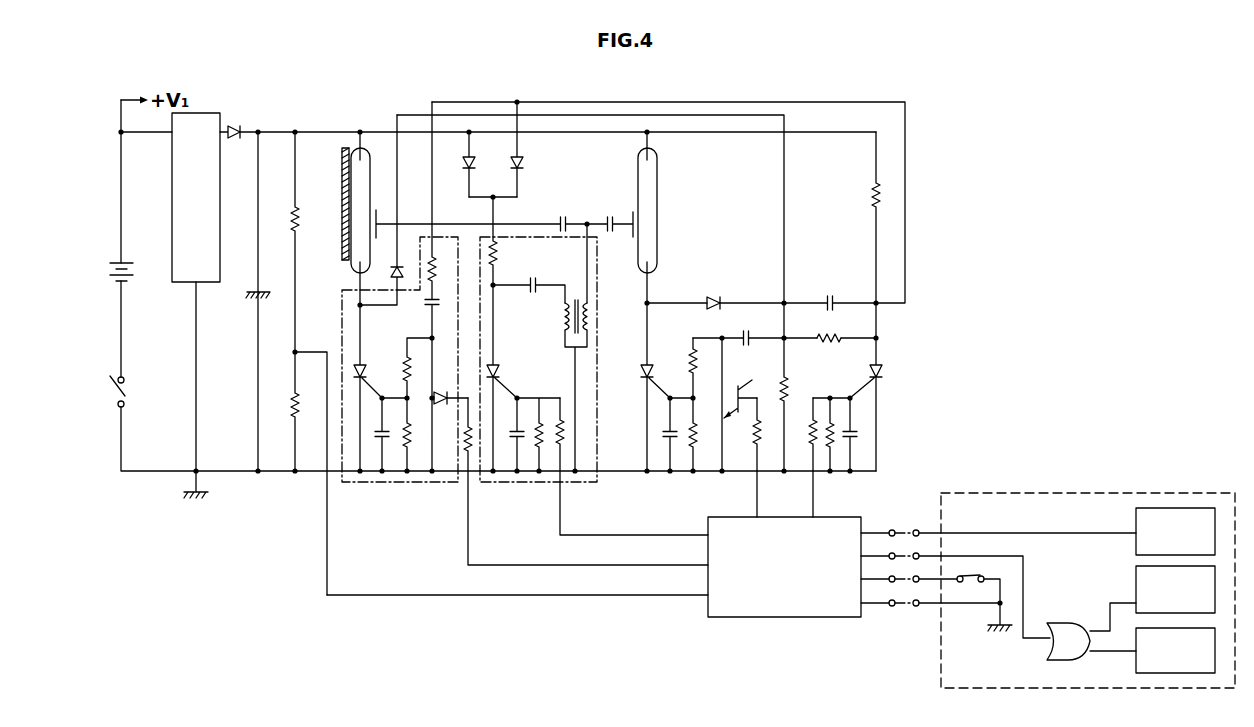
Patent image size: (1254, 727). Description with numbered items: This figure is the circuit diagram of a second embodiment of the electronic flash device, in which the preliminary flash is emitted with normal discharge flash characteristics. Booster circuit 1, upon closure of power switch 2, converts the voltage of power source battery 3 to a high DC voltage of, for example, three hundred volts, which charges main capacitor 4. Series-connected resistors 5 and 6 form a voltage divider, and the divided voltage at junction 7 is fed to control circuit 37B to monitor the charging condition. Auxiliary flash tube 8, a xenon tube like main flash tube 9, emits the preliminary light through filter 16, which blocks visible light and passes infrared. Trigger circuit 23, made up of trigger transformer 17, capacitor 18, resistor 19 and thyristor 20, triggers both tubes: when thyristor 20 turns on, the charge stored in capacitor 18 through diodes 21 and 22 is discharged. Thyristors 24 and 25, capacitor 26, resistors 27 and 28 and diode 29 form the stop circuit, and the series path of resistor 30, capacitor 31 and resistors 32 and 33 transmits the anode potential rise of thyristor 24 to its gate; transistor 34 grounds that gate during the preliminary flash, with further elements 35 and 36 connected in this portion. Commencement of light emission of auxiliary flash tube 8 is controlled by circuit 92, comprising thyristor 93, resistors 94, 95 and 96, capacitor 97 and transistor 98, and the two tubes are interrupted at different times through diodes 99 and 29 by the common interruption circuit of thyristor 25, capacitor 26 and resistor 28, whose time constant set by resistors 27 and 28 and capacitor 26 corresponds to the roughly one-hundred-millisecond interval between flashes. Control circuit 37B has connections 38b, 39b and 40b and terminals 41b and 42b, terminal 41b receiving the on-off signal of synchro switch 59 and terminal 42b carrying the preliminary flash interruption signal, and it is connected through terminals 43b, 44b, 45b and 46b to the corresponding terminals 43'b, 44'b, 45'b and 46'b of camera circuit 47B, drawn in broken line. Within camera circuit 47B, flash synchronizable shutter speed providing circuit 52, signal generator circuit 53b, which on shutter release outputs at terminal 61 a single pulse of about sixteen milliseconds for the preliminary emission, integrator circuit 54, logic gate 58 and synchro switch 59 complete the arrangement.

The booster circuit 1 is at (222, 114).
The power switch 2 is at (112, 380).
The power source battery 3 is at (116, 270).
The main capacitor 4 is at (252, 298).
The resistor 5 is at (297, 210).
The resistor 6 is at (293, 398).
The junction 7 is at (297, 350).
The auxiliary flash tube 8 is at (367, 170).
The main flash tube 9 is at (661, 164).
The filter 16 is at (342, 228).
The trigger transformer 17 is at (590, 302).
The capacitor 18 is at (533, 300).
The resistor 19 is at (497, 252).
The thyristor 20 is at (500, 370).
The diode 21 is at (467, 172).
The diode 22 is at (524, 164).
The trigger circuit 23 is at (500, 483).
The thyristor 24 is at (640, 368).
The thyristor 25 is at (879, 368).
The capacitor 26 is at (834, 296).
The resistor 27 is at (870, 194).
The resistor 28 is at (790, 384).
The diode 29 is at (716, 299).
The resistor 30 is at (835, 338).
The capacitor 31 is at (750, 334).
The resistor 32 is at (690, 360).
The resistor 33 is at (698, 426).
The transistor 34 is at (751, 381).
The resistor 35 is at (757, 440).
The resistor 36 is at (811, 430).
The control circuit 37B is at (784, 567).
The input line 38b is at (661, 596).
The terminal 39b is at (661, 566).
The input line 40b is at (667, 534).
The terminal 41b is at (754, 504).
The terminal 42b is at (814, 505).
The terminal 43b is at (889, 530).
The terminal 44b is at (889, 554).
The terminal 45b is at (889, 581).
The terminal 46b is at (868, 605).
The input terminal 43'b is at (1015, 495).
The input terminal 44'b is at (972, 587).
The input terminal 45'b is at (892, 626).
The input terminal 46'b is at (945, 632).
The camera circuit 47B is at (1102, 492).
The flash synchronizable shutter speed providing circuit 52 is at (1175, 531).
The signal generator circuit 53b is at (1175, 589).
The integrator circuit 54 is at (1175, 650).
The OR gate 58 is at (1054, 657).
The synchro switch 59 is at (972, 587).
The terminal 61 is at (1121, 604).
The circuit 92 is at (376, 483).
The thyristor 93 is at (362, 360).
The resistor 94 is at (434, 266).
The resistor 95 is at (405, 370).
The resistor 96 is at (410, 424).
The capacitor 97 is at (440, 303).
The transistor 98 is at (434, 390).
The diode 99 is at (398, 262).